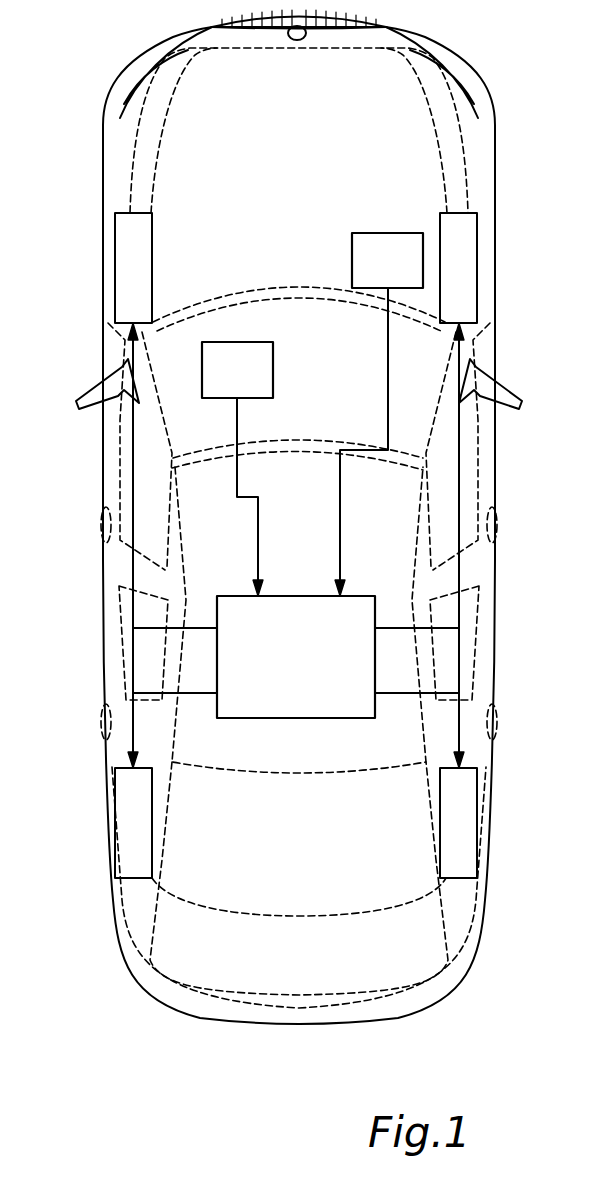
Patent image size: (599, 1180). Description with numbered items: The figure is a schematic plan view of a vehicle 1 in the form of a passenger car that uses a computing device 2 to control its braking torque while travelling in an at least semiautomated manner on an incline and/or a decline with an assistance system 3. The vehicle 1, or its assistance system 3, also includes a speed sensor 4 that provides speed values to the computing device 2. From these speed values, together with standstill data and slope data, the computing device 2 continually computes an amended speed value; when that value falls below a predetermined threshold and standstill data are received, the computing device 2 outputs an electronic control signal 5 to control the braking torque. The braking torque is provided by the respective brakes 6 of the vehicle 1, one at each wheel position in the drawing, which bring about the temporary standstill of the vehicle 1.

The vehicle 1 is at (473, 64).
The computing device 2 is at (321, 718).
The assistance system 3 is at (237, 342).
The speed sensor 4 is at (384, 232).
The electronic control signal 5 is at (461, 483).
The brakes 6 is at (120, 266).